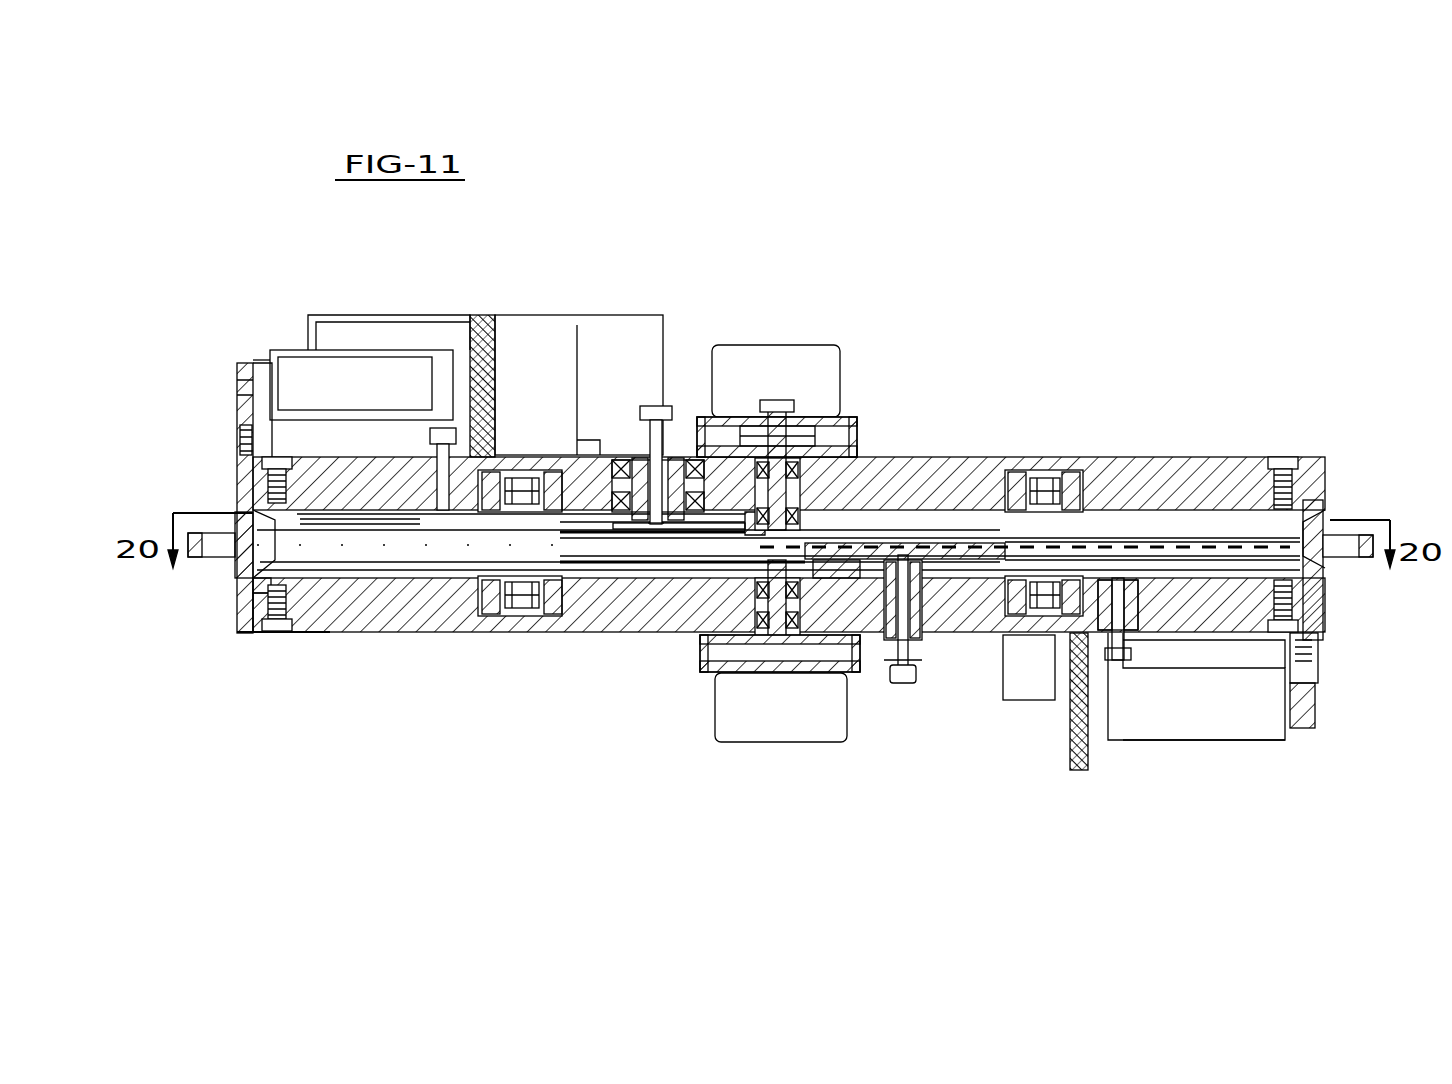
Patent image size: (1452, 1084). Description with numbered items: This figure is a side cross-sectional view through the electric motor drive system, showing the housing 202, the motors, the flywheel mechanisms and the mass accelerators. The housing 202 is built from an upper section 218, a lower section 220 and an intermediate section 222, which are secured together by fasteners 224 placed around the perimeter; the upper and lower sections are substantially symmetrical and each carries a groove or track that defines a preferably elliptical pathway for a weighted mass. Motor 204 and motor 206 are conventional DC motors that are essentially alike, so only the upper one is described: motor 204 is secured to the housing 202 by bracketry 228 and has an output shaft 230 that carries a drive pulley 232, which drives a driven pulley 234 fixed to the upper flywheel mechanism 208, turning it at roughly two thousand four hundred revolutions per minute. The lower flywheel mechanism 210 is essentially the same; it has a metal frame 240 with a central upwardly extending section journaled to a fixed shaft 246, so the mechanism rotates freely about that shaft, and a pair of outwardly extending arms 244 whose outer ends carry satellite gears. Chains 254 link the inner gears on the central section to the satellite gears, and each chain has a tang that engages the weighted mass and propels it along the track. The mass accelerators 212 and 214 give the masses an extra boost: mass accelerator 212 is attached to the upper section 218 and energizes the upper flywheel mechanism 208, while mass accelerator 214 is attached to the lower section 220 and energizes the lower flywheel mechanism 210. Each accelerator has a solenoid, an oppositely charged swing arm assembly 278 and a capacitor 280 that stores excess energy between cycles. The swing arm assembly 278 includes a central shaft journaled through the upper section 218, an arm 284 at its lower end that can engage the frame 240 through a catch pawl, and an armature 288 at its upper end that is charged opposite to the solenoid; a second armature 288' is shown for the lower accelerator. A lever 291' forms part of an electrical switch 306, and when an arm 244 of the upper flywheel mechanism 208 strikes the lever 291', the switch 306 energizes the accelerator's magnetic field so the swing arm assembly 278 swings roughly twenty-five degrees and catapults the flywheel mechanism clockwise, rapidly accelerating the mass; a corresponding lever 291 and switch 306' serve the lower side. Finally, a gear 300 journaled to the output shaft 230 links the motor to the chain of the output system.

The housing 202 is at (1185, 405).
The motor 204 is at (785, 360).
The motor 206 is at (780, 651).
The upper flywheel mechanism 208 is at (680, 405).
The lower flywheel mechanism 210 is at (885, 690).
The mass accelerator 212 is at (250, 335).
The mass accelerator 214 is at (1140, 748).
The upper section 218 is at (1205, 460).
The lower section 220 is at (250, 628).
The intermediate section 222 is at (245, 572).
The fasteners 224 is at (268, 633).
The bracketry 228 is at (850, 430).
The output shaft 230 is at (785, 440).
The drive pulley 232 is at (870, 462).
The driven pulley 234 is at (605, 455).
The frame 240 is at (385, 525).
The arms 244 is at (600, 525).
The fixed shaft 246 is at (652, 430).
The chains 254 is at (1120, 550).
The swing arm assembly 278 is at (420, 545).
The capacitor 280 is at (1029, 667).
The arm 284 is at (338, 522).
The armature 288 is at (361, 367).
The second solenoid 288' is at (1196, 686).
The end flange 291 is at (1356, 570).
The lever 291' is at (211, 512).
The gear 300 is at (860, 450).
The electrical switch 306 is at (195, 416).
The seal 306' is at (1355, 680).